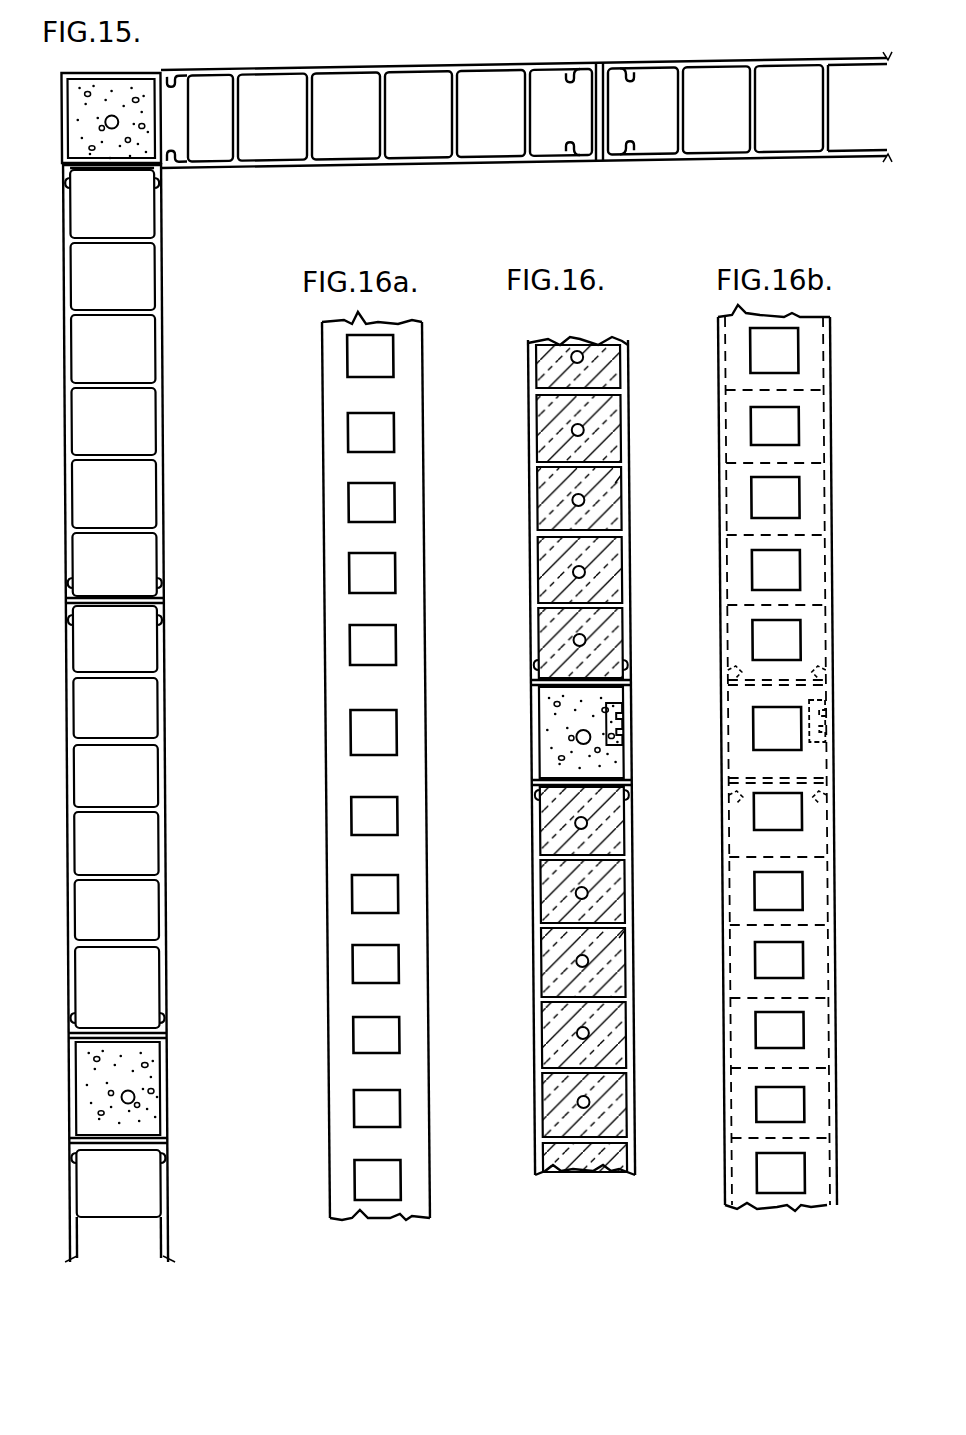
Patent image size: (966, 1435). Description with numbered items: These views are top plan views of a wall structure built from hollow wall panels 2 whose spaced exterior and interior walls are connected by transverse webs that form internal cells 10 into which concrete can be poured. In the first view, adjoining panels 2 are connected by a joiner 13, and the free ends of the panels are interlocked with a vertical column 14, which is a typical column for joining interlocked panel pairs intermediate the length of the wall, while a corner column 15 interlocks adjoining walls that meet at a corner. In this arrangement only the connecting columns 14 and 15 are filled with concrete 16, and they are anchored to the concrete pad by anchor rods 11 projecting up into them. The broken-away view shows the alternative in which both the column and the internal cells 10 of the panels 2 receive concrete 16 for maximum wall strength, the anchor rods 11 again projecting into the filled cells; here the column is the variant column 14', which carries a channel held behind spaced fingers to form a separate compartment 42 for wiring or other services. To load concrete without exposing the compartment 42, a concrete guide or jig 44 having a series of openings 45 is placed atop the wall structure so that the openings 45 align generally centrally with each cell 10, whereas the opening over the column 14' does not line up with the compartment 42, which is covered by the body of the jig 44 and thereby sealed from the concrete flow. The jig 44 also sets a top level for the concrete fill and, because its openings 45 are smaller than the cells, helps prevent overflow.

In FIG. 15, the wall panel 2 is at (60, 441).
In FIG. 16, the wall panel 2 is at (520, 436).
In FIG. 16, the internal cell 10 is at (540, 824).
In FIG. 15, the anchor rod 11 is at (106, 127).
In FIG. 16, the anchor rod 11 is at (583, 428).
In FIG. 15, the joiner 13 is at (163, 601).
In FIG. 15, the vertical column 14 is at (94, 1125).
In FIG. 16, the column with wiring compartment 14' is at (548, 736).
In FIG. 16B, the column with wiring compartment 14' is at (813, 734).
In FIG. 15, the corner column 15 is at (62, 113).
In FIG. 15, the concrete 16 is at (128, 77).
In FIG. 16, the concrete 16 is at (622, 487).
In FIG. 16, the compartment 42 is at (622, 733).
In FIG. 16B, the compartment 42 is at (832, 715).
In FIG. 16A, the concrete guide or jig 44 is at (320, 730).
In FIG. 16B, the concrete guide or jig 44 is at (812, 607).
In FIG. 16A, the opening 45 is at (390, 643).
In FIG. 16B, the opening 45 is at (766, 818).